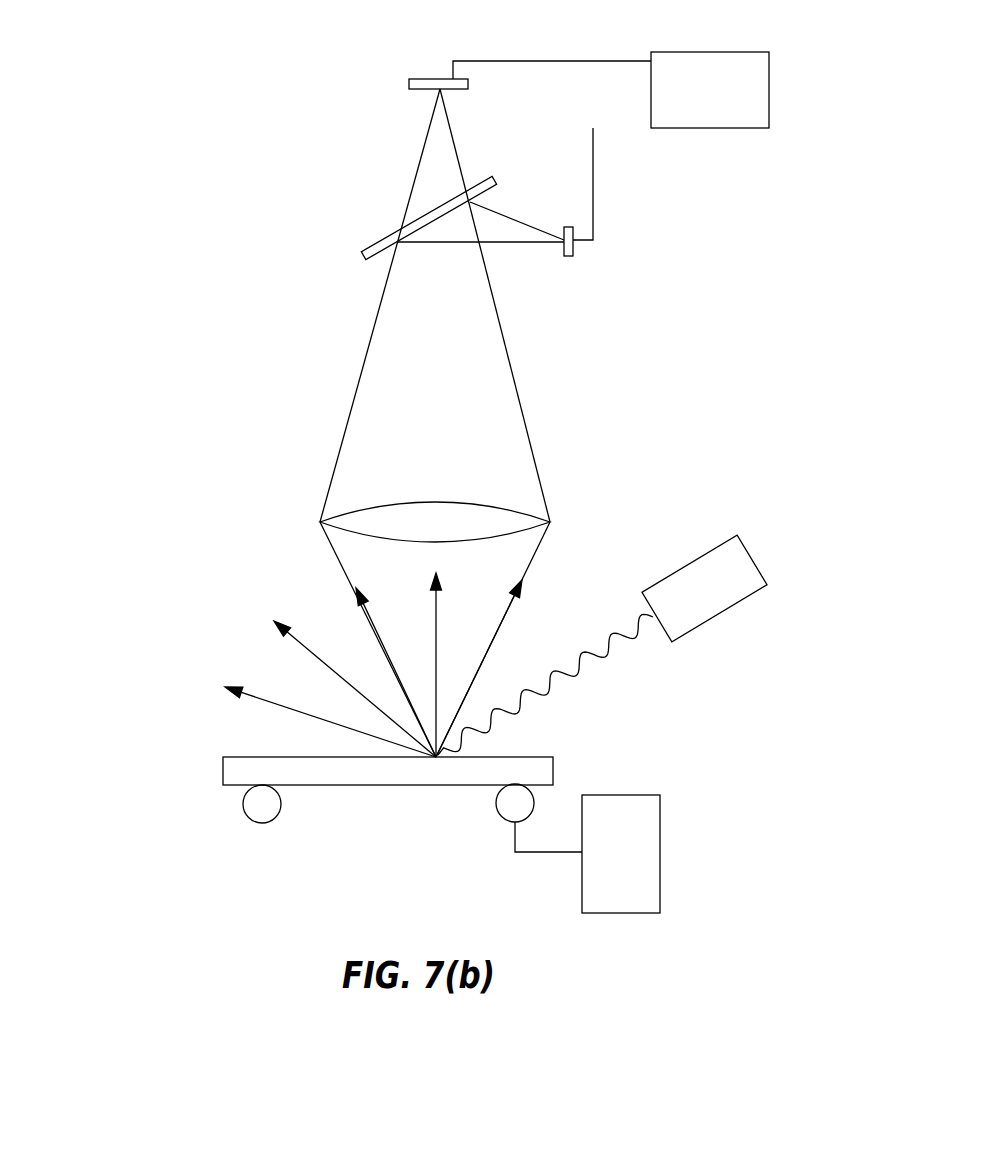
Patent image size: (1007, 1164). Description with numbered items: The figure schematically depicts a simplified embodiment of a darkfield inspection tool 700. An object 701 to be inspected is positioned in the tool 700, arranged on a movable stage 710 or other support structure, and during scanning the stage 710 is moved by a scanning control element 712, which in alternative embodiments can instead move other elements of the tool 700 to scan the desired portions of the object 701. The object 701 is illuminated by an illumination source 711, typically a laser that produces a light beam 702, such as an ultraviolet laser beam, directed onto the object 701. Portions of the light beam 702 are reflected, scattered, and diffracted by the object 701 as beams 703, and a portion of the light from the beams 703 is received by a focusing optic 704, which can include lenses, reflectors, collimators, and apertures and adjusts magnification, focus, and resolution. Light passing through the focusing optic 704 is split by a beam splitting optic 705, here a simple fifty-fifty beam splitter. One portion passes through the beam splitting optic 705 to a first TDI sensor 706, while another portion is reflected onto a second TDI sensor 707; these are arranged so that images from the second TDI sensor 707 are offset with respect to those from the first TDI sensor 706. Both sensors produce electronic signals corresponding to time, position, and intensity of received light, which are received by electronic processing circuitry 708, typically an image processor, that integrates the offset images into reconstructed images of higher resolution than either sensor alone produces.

The darkfield inspection tool 700 is at (137, 173).
The object 701 is at (223, 767).
The light beam 702 is at (572, 683).
The beams 703 is at (437, 613).
The focusing optic 704 is at (551, 520).
The beam splitting optic 705 is at (385, 238).
The first TDI sensor 706 is at (423, 78).
The second TDI sensor 707 is at (573, 247).
The electronic processing circuitry 708 is at (769, 93).
The movable stage 710 is at (505, 822).
The illumination source 711 is at (722, 613).
The scanning control element 712 is at (620, 913).